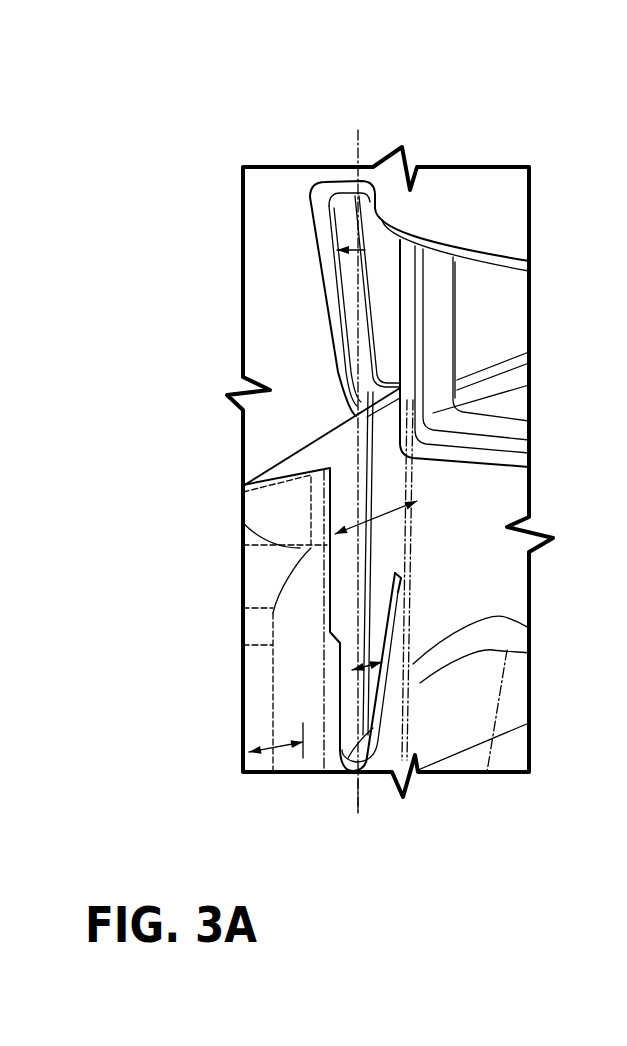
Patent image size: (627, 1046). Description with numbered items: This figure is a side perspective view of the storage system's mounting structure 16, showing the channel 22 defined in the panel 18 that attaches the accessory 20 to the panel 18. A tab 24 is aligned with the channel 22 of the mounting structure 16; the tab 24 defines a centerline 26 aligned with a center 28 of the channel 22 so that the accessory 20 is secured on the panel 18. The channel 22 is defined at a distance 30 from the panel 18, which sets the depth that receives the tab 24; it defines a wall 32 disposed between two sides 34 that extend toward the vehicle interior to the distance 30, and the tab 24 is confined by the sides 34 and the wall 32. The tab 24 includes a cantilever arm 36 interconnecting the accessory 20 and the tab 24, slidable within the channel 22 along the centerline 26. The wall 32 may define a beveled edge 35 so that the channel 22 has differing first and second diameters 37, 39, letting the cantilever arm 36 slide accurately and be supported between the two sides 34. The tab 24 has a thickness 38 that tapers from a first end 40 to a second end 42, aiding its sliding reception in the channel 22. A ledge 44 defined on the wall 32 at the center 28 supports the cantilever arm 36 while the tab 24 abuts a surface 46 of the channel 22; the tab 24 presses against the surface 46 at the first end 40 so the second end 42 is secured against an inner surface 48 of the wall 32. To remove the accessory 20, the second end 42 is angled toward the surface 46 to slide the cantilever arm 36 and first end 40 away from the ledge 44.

The mounting structure 16 is at (287, 660).
The panel 18 is at (497, 403).
The accessory 20 is at (493, 163).
The channel 22 is at (303, 452).
The tab 24 is at (372, 213).
The centerline 26 is at (357, 150).
The center 28 is at (360, 782).
The distance 30 is at (282, 743).
The wall 32 is at (392, 737).
The sides 34 is at (263, 545).
The beveled edge 35 is at (398, 582).
The cantilever arm 36 is at (383, 260).
The first diameter 37 is at (405, 506).
The thickness 38 is at (310, 245).
The second diameter 39 is at (382, 662).
The first end 40 is at (325, 195).
The second end 42 is at (343, 445).
The ledge 44 is at (373, 728).
The surface 46 is at (147, 392).
The inner surface 48 is at (387, 622).